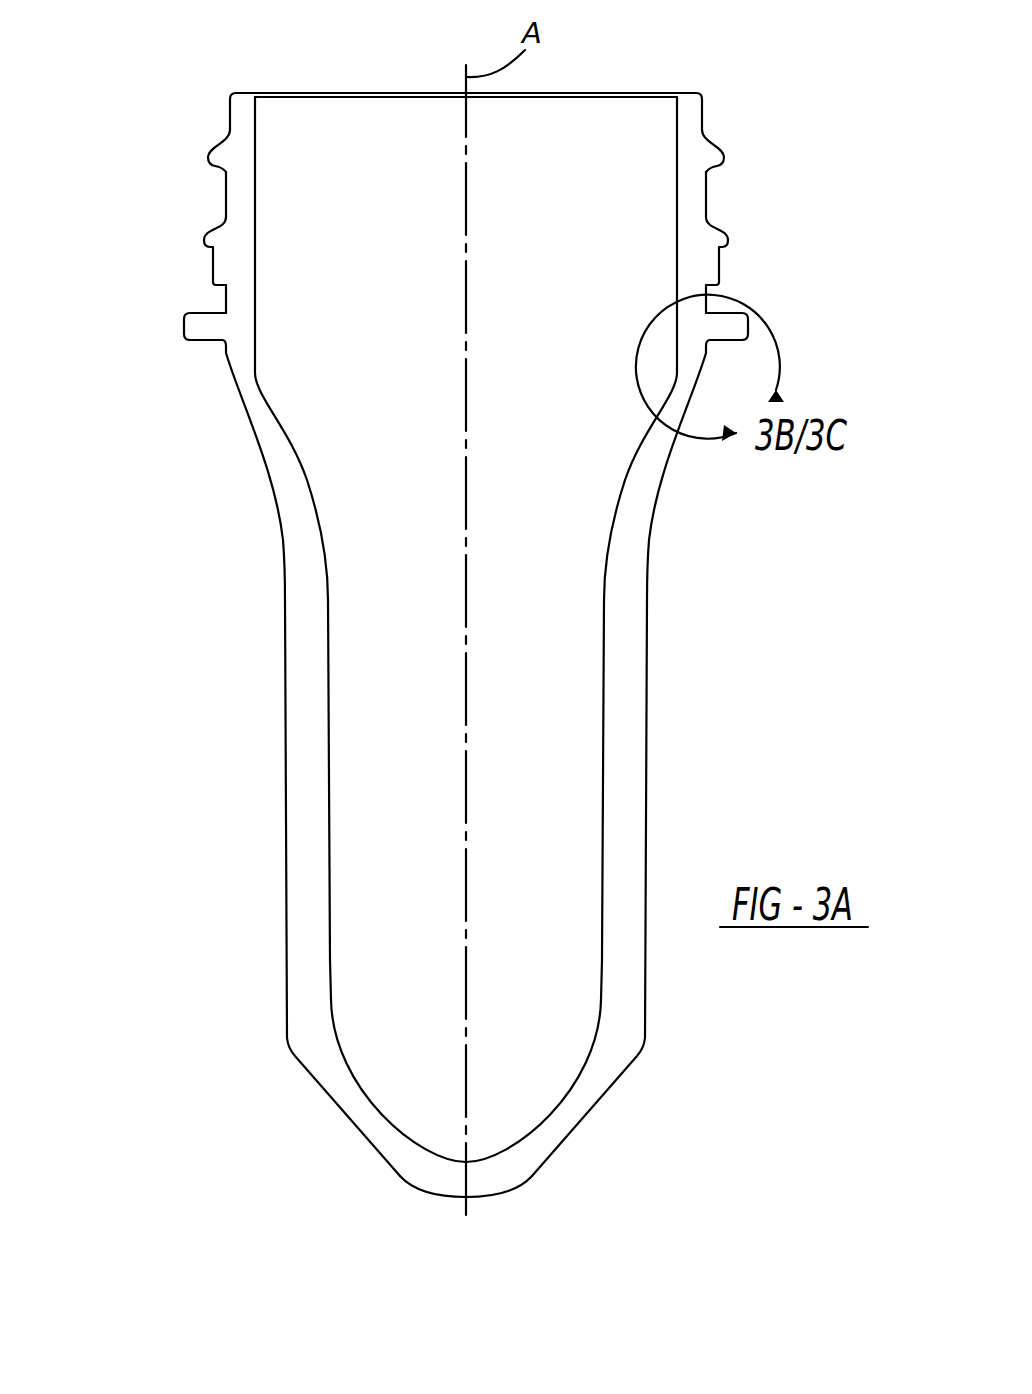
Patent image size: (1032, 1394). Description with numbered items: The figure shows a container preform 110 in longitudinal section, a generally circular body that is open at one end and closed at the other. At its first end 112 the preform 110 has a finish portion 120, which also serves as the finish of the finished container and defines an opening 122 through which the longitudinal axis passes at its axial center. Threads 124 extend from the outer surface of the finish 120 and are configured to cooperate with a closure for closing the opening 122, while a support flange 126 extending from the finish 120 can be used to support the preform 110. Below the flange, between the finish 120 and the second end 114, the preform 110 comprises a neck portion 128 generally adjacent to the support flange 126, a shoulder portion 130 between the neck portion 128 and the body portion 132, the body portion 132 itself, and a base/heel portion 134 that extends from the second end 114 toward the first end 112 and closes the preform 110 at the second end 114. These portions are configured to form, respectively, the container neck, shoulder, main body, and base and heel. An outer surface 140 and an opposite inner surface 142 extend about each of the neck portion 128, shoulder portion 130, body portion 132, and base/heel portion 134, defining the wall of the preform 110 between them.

The container preform 110 is at (178, 44).
The first end 112 is at (242, 93).
The second end 114 is at (500, 1190).
The finish portion 120 is at (233, 115).
The opening 122 is at (677, 141).
The threads 124 is at (723, 162).
The support flange 126 is at (750, 325).
The neck portion 128 is at (227, 353).
The shoulder portion 130 is at (278, 457).
The body portion 132 is at (308, 817).
The base/heel portion 134 is at (368, 1115).
The outer surface 140 is at (650, 650).
The inner surface 142 is at (607, 753).